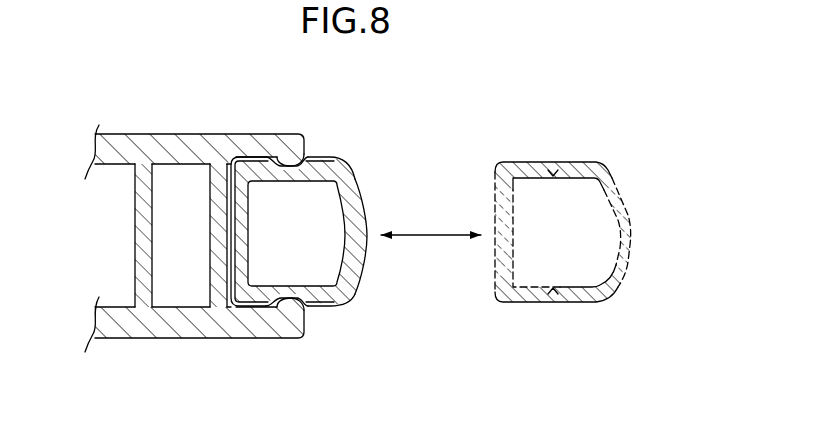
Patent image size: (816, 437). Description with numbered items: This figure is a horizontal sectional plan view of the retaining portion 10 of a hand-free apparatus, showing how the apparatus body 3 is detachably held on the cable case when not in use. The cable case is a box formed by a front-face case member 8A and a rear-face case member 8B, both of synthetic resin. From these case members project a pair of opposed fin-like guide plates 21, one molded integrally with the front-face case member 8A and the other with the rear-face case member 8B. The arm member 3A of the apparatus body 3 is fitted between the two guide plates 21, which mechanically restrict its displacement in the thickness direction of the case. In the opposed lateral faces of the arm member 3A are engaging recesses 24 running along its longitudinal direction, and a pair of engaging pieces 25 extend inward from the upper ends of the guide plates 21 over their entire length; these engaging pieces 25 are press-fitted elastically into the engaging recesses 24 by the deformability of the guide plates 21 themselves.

The apparatus body 3 is at (467, 242).
The arm member 3A is at (358, 201).
The front-face case member 8A is at (152, 135).
The rear-face case member 8B is at (145, 341).
The retaining portion 10 is at (292, 128).
The guide plates 21 is at (253, 136).
The engaging recesses 24 is at (300, 138).
The engaging pieces 25 is at (305, 153).